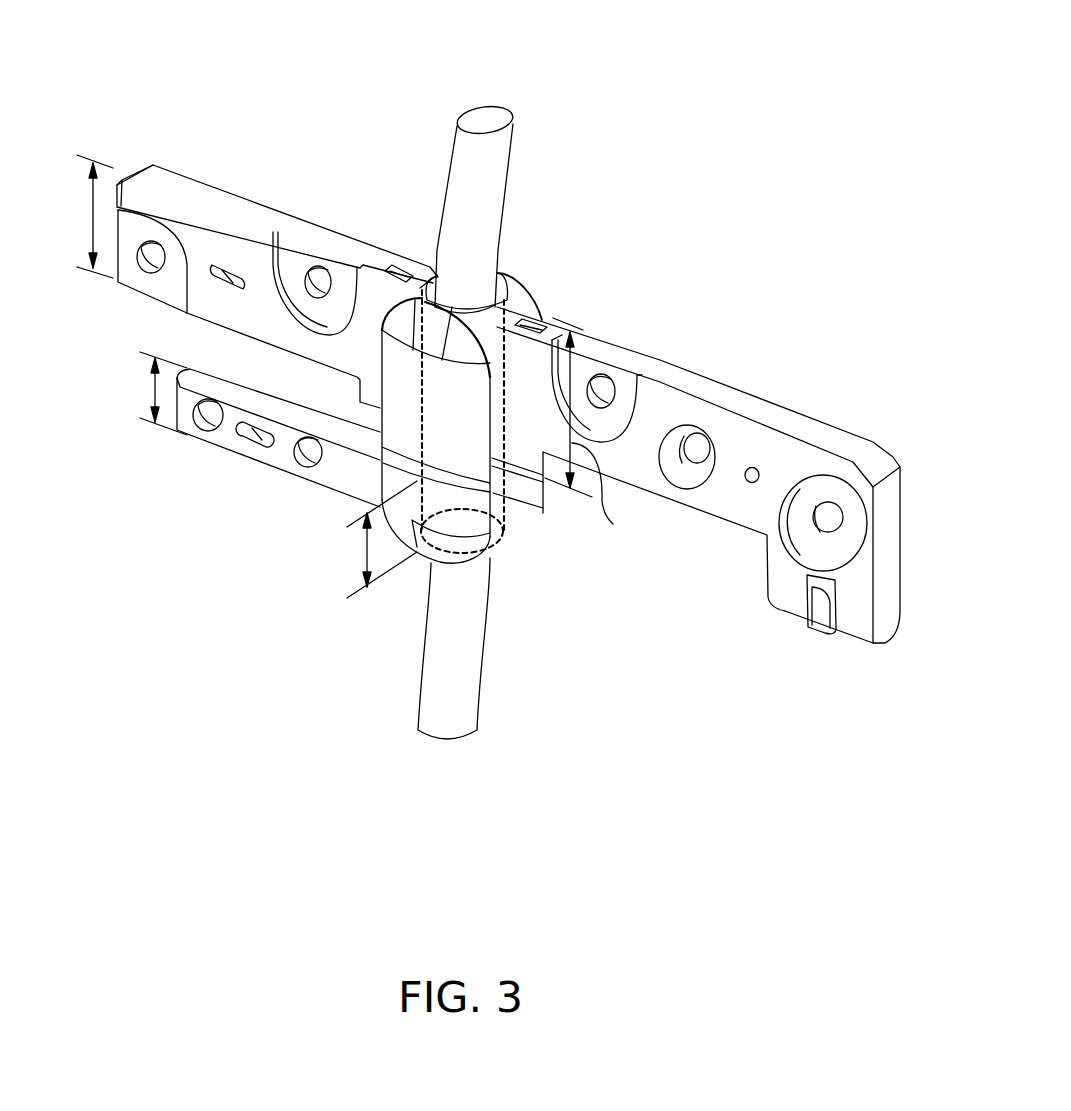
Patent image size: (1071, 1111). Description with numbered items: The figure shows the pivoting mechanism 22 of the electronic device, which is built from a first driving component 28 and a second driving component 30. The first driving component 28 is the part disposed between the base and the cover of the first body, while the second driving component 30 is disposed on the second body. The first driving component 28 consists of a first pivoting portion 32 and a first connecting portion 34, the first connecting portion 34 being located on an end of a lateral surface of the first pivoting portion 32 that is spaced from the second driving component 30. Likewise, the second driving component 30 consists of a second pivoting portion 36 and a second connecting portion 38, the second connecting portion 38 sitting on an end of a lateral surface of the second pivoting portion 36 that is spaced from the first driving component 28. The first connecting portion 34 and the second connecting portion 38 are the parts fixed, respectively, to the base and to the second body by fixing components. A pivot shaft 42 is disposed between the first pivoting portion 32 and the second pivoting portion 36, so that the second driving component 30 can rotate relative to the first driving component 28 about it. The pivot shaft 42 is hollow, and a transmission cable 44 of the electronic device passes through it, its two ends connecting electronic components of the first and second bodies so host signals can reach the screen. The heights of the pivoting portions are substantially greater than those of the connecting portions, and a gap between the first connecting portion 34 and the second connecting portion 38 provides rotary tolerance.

The pivoting mechanism 22 is at (812, 74).
The first driving component 28 is at (297, 567).
The second driving component 30 is at (705, 283).
The first pivoting portion 32 is at (415, 478).
The first connecting portion 34 is at (240, 443).
The second pivoting portion 36 is at (523, 302).
The second connecting portion 38 is at (663, 407).
The pivot shaft 42 is at (382, 340).
The transmission cable 44 is at (490, 168).